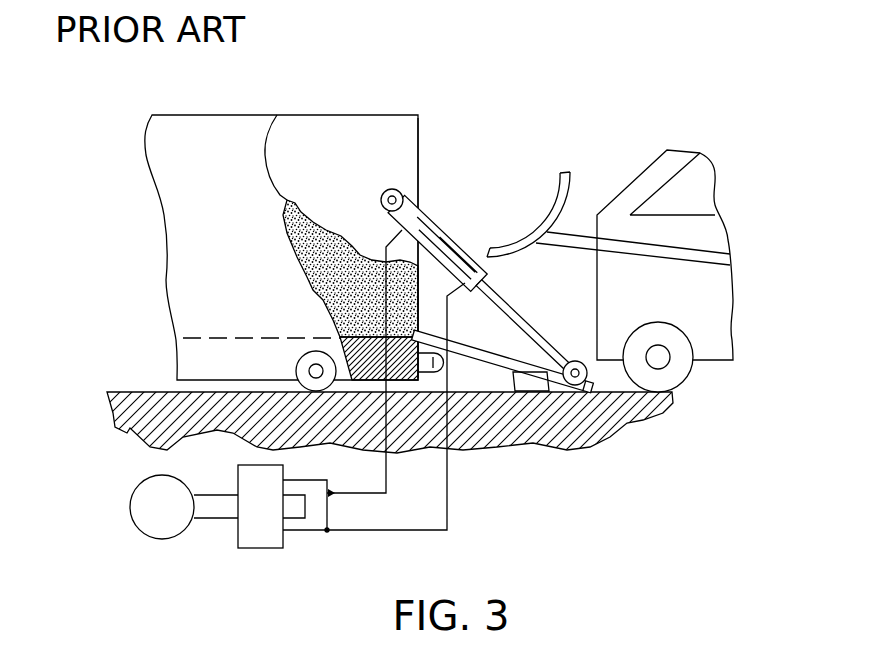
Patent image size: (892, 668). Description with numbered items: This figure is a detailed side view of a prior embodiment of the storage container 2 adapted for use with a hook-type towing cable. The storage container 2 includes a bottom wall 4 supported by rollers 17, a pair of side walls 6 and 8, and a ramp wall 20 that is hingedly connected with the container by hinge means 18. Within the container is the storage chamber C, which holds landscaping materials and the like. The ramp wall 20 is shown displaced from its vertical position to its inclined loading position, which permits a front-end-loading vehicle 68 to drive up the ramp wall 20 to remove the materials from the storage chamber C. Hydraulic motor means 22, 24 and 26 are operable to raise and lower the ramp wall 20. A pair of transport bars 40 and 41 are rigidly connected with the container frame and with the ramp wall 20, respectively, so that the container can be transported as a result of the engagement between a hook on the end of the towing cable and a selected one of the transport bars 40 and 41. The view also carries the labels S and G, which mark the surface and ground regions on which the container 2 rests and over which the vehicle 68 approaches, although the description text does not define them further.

The storage container 2 is at (285, 282).
The bottom wall 4 is at (386, 378).
The side wall 6 is at (209, 219).
The side wall 8 is at (402, 143).
The rollers 17 is at (313, 352).
The hinge means 18 is at (410, 333).
The ramp wall 20 is at (516, 372).
The hydraulic motor means 22 is at (443, 224).
The hydraulic motor means 24 is at (153, 540).
The hydraulic motor means 26 is at (260, 550).
The transport bar 40 is at (447, 360).
The transport bar 41 is at (563, 366).
The front-end-loading vehicle 68 is at (647, 168).
The storage chamber C is at (317, 138).
The surface S is at (143, 390).
The ground G is at (140, 428).